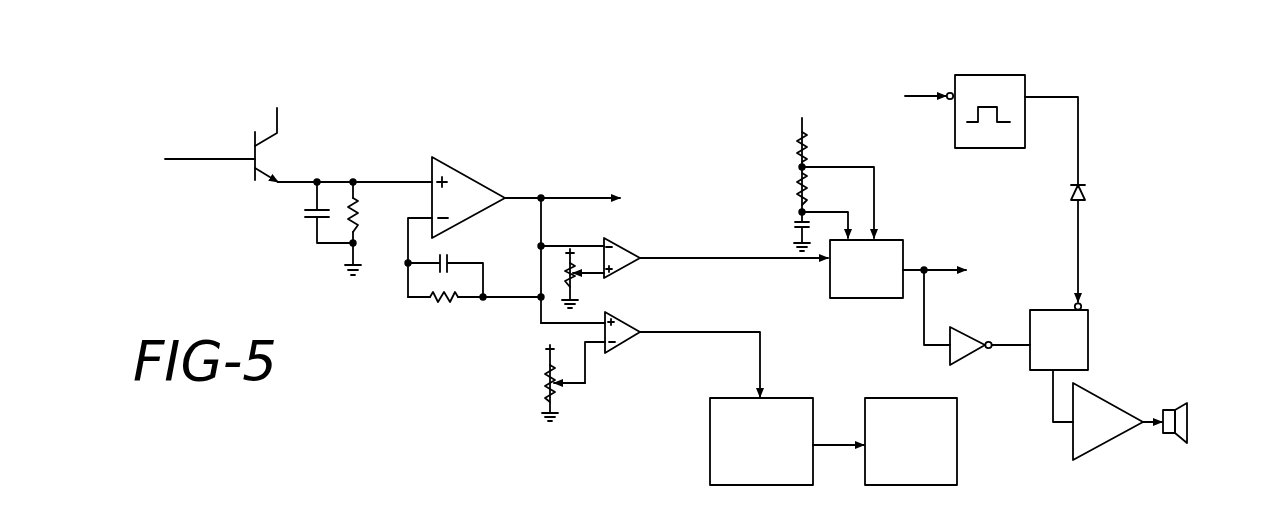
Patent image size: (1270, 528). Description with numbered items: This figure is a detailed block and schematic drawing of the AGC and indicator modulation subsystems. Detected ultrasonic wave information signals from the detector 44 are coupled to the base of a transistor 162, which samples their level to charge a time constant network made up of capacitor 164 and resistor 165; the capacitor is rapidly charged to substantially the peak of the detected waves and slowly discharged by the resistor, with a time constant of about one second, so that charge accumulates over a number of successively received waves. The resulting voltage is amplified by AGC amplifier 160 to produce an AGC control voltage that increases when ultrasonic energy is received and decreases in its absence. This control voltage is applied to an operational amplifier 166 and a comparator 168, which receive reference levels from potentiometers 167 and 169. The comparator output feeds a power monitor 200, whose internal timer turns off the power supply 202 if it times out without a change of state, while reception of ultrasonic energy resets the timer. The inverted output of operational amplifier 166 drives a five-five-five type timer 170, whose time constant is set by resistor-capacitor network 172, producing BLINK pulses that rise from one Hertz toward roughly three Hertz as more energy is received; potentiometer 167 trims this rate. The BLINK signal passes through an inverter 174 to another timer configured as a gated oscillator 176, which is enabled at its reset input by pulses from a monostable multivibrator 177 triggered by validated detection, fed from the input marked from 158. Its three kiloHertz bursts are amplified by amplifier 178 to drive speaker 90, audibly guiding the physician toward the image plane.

The detector 44 is at (149, 159).
The transistor 162 is at (255, 146).
The capacitor 164 is at (307, 225).
The resistor 165 is at (357, 212).
The AGC amplifier 160 is at (475, 177).
The operational amplifier 166 is at (623, 246).
The potentiometer 167 is at (575, 281).
The comparator 168 is at (618, 347).
The potentiometer 169 is at (543, 388).
The 555 type timer 170 is at (853, 299).
The resistor-capacitor network 172 is at (782, 157).
The inverter 174 is at (963, 327).
The gated oscillator 176 is at (1090, 335).
The monostable multivibrator 177 is at (1000, 75).
The input from 158 is at (898, 94).
The amplifier 178 is at (1115, 438).
The speaker 90 is at (1192, 412).
The power monitor 200 is at (710, 453).
The power supply 202 is at (897, 398).